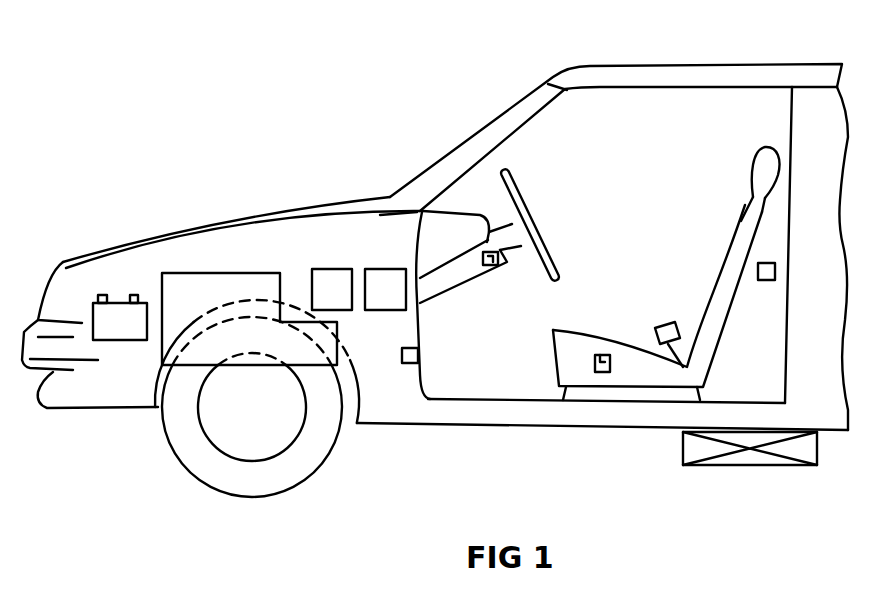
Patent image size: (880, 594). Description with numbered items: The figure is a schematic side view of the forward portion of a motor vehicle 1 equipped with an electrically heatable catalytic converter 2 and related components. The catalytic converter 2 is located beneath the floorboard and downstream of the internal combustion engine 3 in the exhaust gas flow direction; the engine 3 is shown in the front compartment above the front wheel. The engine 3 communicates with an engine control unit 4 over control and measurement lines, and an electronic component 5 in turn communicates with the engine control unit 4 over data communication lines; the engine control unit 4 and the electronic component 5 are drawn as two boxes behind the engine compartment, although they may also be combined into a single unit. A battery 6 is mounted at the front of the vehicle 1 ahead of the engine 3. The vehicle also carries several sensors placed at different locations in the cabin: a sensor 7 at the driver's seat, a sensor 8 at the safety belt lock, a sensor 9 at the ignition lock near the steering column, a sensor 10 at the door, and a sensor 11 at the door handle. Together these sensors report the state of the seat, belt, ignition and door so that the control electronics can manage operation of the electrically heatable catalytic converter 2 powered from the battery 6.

The motor vehicle 1 is at (773, 64).
The electrically heatable catalytic converter 2 is at (745, 458).
The internal combustion engine 3 is at (207, 287).
The engine control unit 4 is at (333, 283).
The electronic component 5 is at (382, 283).
The battery 6 is at (117, 315).
The sensor 7 is at (600, 355).
The sensor 8 is at (667, 327).
The sensor 9 is at (492, 265).
The sensor 10 is at (418, 355).
The sensor 11 is at (775, 271).